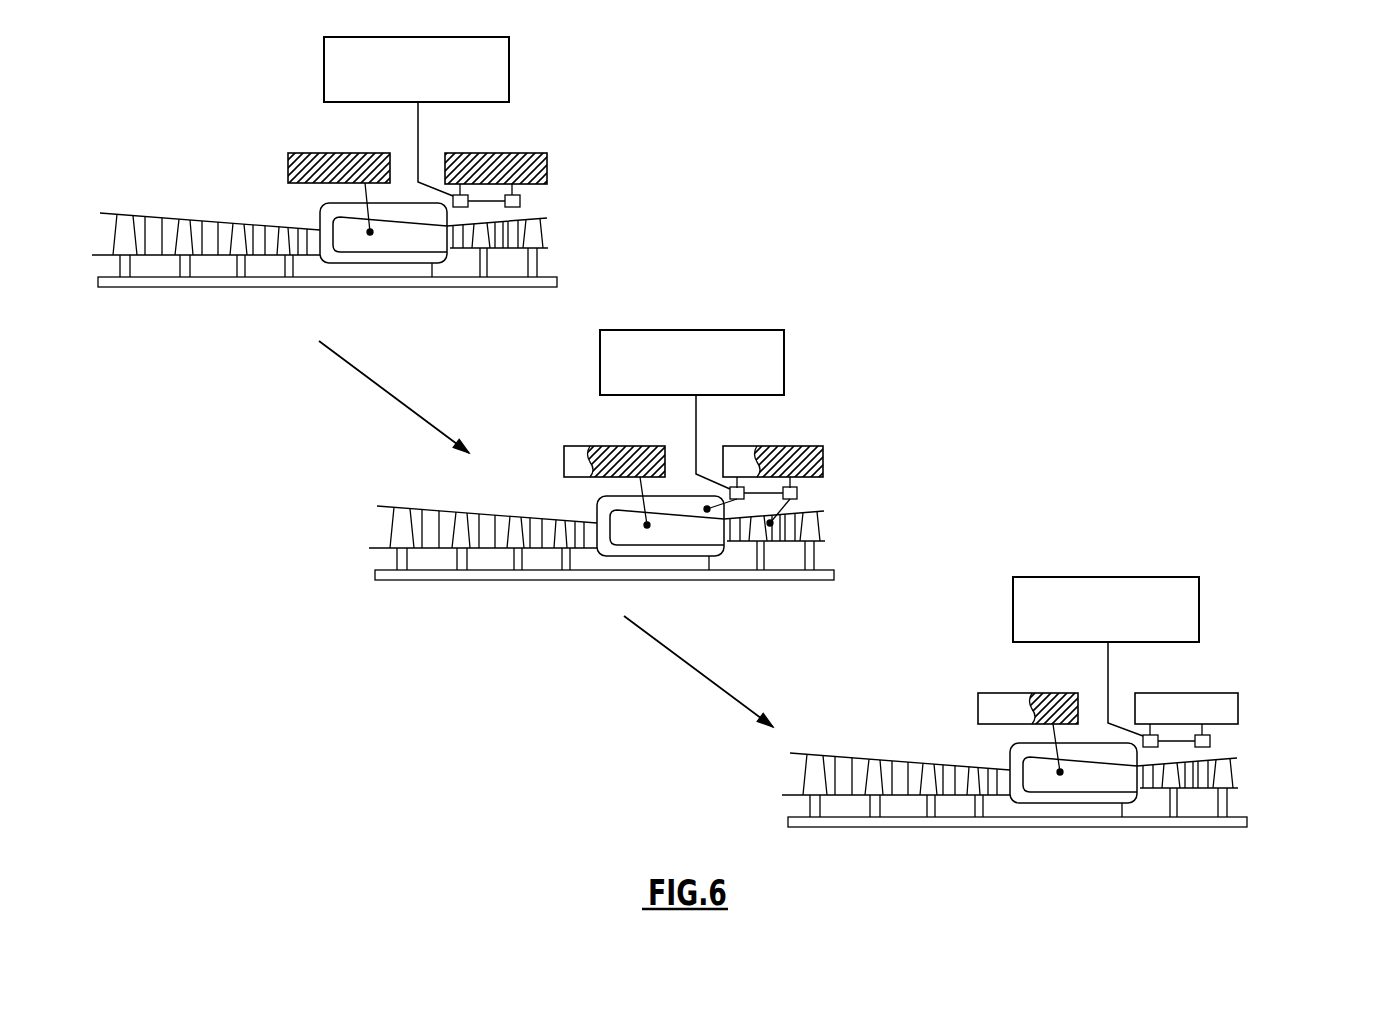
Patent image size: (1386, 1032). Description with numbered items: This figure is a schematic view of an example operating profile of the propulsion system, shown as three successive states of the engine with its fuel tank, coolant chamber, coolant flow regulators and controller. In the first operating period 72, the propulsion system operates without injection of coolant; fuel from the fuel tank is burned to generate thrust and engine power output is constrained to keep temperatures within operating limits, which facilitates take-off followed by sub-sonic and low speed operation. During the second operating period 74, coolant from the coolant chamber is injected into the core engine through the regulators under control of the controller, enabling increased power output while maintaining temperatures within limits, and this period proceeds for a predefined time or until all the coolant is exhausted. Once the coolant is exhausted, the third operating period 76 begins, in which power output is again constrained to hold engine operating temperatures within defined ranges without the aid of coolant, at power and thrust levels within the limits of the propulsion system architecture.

The first operating period 72 is at (690, 138).
The second operating period 74 is at (950, 400).
The third operating period 76 is at (1260, 612).